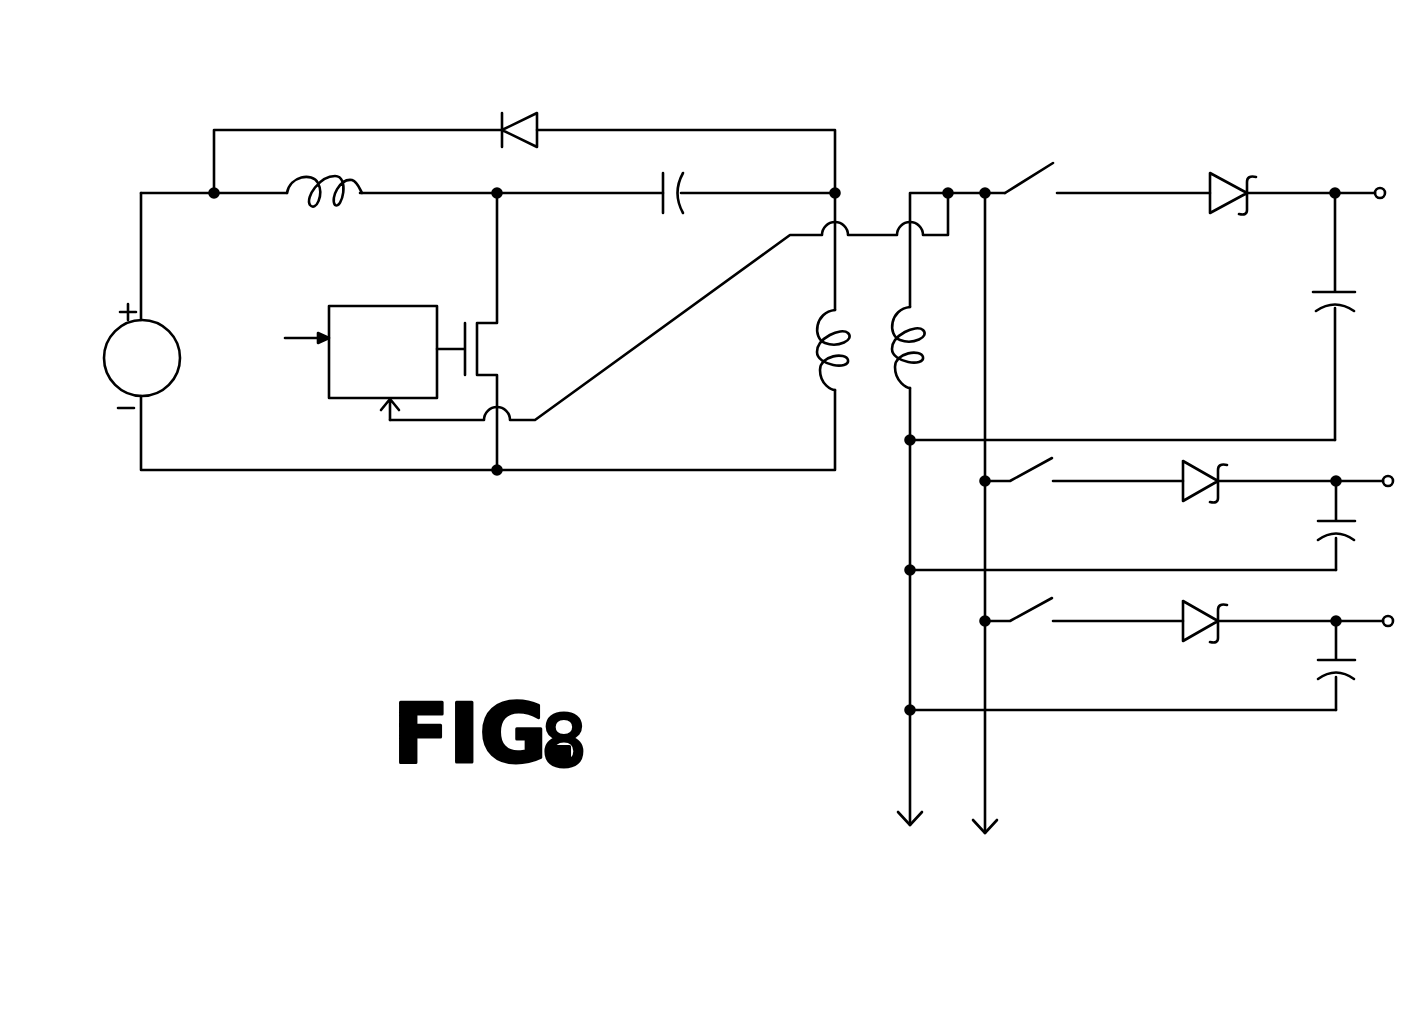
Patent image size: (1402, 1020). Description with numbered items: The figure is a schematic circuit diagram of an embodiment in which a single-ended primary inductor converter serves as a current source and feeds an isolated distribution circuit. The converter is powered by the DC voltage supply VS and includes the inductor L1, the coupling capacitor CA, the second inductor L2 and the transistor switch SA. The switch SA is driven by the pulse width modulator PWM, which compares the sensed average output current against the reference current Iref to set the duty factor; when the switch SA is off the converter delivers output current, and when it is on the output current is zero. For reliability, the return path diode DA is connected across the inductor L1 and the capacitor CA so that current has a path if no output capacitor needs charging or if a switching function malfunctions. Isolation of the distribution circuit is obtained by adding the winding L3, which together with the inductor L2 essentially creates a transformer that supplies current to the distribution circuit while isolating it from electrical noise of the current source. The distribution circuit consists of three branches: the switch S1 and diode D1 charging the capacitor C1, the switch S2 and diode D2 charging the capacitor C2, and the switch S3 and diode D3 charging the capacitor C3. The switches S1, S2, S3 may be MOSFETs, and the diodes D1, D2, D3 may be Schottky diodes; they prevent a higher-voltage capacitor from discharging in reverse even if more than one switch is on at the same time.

The DC voltage supply VS is at (120, 356).
The inductor L1 is at (324, 213).
The return path diode DA is at (524, 109).
The capacitor CA is at (681, 217).
The transistor switch SA is at (490, 356).
The pulse width modulator PWM is at (383, 352).
The reference current Iref is at (275, 333).
The inductor L2 is at (813, 350).
The additional winding L3 is at (925, 347).
The switch S1 is at (1107, 193).
The diode D1 is at (1297, 178).
The capacitor C1 is at (1345, 316).
The switch S2 is at (1082, 487).
The diode D2 is at (1285, 499).
The capacitor C2 is at (1358, 525).
The switch S3 is at (1082, 627).
The diode D3 is at (1284, 639).
The capacitor C3 is at (1358, 665).